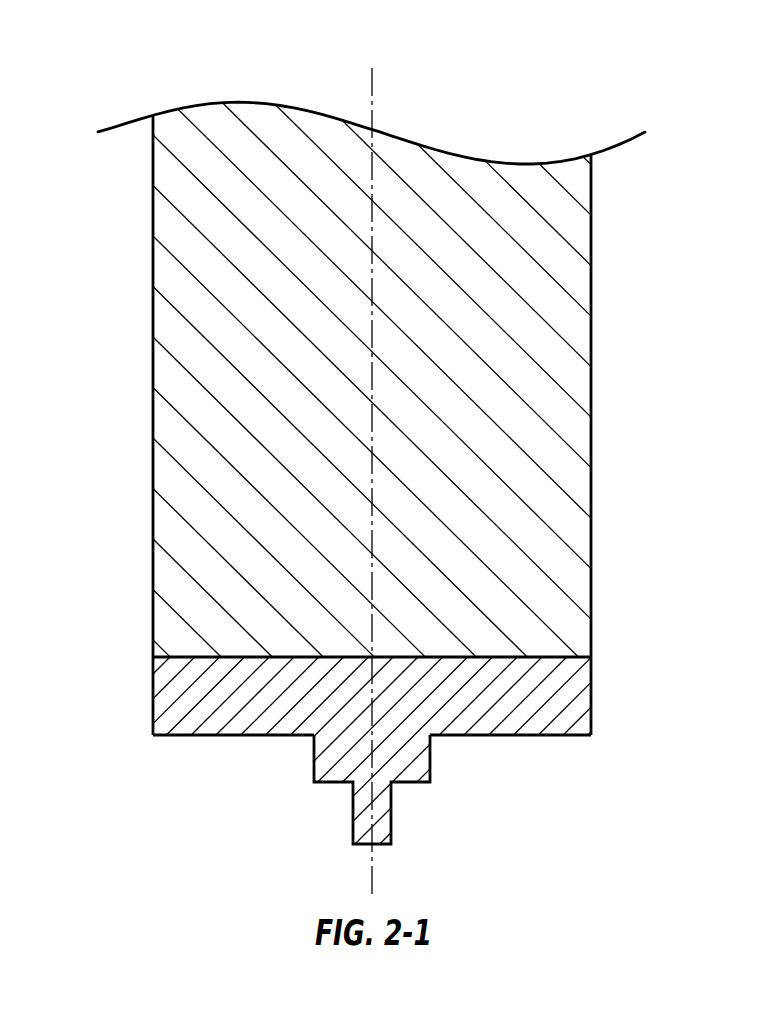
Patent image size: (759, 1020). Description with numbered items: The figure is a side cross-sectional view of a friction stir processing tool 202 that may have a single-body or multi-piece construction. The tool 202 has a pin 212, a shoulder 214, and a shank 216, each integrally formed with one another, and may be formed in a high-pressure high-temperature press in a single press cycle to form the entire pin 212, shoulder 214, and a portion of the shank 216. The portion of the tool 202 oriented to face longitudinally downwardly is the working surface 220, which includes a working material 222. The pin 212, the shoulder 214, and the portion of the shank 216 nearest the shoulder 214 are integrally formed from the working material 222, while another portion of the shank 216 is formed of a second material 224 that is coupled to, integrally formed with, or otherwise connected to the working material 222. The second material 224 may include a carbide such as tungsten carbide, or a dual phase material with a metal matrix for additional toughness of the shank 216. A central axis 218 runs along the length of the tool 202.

The FSP tool 202 is at (630, 460).
The pin 212 is at (430, 760).
The shoulder 214 is at (570, 736).
The shank 216 is at (548, 311).
The central axis 218 is at (372, 100).
The working surface 220 is at (186, 754).
The working material 222 is at (197, 697).
The second material 224 is at (196, 402).